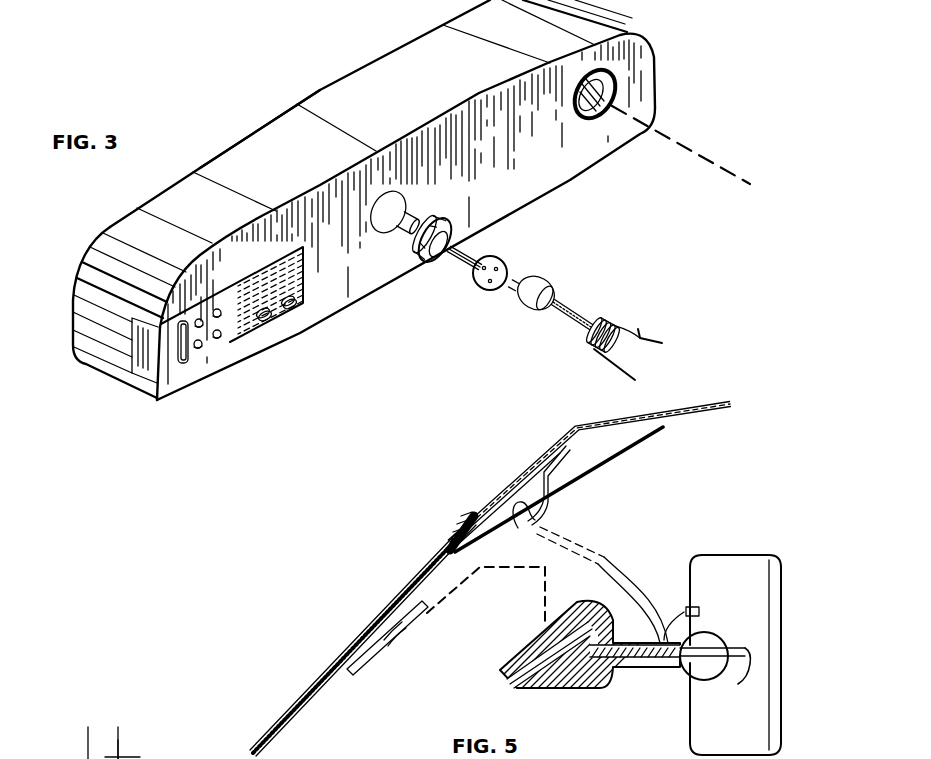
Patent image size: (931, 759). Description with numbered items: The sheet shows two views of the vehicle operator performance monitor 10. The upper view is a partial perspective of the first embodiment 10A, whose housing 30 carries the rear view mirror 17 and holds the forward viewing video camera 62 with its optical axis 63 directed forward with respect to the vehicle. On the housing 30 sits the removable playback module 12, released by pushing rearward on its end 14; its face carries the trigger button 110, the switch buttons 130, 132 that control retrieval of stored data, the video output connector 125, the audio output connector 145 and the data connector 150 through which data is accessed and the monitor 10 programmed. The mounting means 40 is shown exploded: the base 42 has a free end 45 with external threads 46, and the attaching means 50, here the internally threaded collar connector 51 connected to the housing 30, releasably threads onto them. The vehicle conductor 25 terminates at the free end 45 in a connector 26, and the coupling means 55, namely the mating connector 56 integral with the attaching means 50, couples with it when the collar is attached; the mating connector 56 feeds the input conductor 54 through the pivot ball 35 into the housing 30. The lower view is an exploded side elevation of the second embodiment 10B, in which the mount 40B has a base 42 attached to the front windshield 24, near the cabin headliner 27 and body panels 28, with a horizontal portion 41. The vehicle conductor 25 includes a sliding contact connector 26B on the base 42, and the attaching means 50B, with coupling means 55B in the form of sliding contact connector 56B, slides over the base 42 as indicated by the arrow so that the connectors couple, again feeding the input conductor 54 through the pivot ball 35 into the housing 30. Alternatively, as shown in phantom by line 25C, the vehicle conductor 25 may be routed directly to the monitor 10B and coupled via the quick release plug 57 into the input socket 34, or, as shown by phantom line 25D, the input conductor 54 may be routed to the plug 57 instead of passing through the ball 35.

In FIG. 3, the vehicle operator performance monitor 10 is at (184, 73).
In FIG. 5, the vehicle operator performance monitor 10 is at (703, 469).
In FIG. 3, the first exemplary embodiment of monitor 10A is at (204, 108).
In FIG. 5, the second embodiment of monitor 10B is at (709, 487).
In FIG. 3, the playback module 12 is at (127, 372).
In FIG. 3, the end 14 is at (143, 343).
In FIG. 3, the rear view mirror 17 is at (271, 120).
In FIG. 5, the rear view mirror 17 is at (782, 560).
In FIG. 5, the front windshield 24 is at (380, 612).
In FIG. 3, the vehicle conductor 25 is at (570, 303).
In FIG. 5, the phantom line for directly routed vehicle conductor 25C is at (630, 558).
In FIG. 5, the phantom line for alternate input wire routing 25D is at (627, 577).
In FIG. 3, the connector 26 is at (531, 278).
In FIG. 5, the sliding contact connector 26B is at (397, 647).
In FIG. 5, the cabin headliner 27 is at (606, 466).
In FIG. 5, the body panels 28 is at (520, 475).
In FIG. 3, the housing 30 is at (106, 206).
In FIG. 5, the housing 30 is at (727, 553).
In FIG. 5, the input socket 34 is at (700, 611).
In FIG. 3, the pivot ball 35 is at (383, 232).
In FIG. 5, the pivot ball 35 is at (718, 633).
In FIG. 3, the mounting means 40 is at (645, 330).
In FIG. 5, the mounting means 40 is at (122, 757).
In FIG. 5, the mount 40B is at (553, 708).
In FIG. 5, the horizontal portion of mount 41 is at (670, 680).
In FIG. 5, the base 42 is at (366, 665).
In FIG. 3, the free end 45 is at (594, 353).
In FIG. 3, the external threads 46 is at (620, 320).
In FIG. 3, the attaching means 50 is at (449, 315).
In FIG. 5, the attaching means 50B is at (605, 681).
In FIG. 3, the internally threaded collar connector 51 is at (425, 267).
In FIG. 5, the input conductor 54 is at (743, 681).
In FIG. 3, the coupling means 55 is at (497, 256).
In FIG. 5, the coupling means 55B is at (553, 640).
In FIG. 3, the mating connector 56 is at (480, 289).
In FIG. 5, the sliding contact connector 56B is at (553, 648).
In FIG. 5, the quick release plug 57 is at (685, 608).
In FIG. 3, the forward viewing video camera 62 is at (616, 96).
In FIG. 3, the optical axis 63 is at (688, 152).
In FIG. 3, the trigger button 110 is at (186, 366).
In FIG. 3, the video output connector 125 is at (230, 322).
In FIG. 3, the switch button 130 is at (200, 320).
In FIG. 3, the switch button 132 is at (205, 345).
In FIG. 3, the audio output connector 145 is at (222, 336).
In FIG. 3, the data connector 150 is at (291, 306).